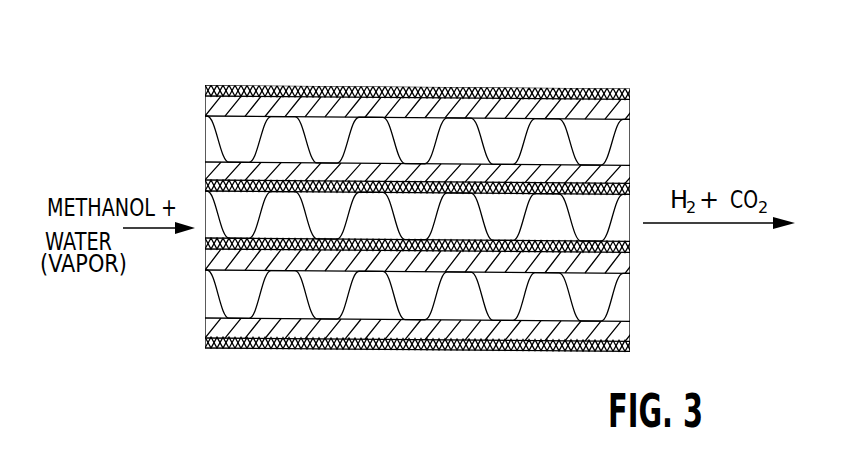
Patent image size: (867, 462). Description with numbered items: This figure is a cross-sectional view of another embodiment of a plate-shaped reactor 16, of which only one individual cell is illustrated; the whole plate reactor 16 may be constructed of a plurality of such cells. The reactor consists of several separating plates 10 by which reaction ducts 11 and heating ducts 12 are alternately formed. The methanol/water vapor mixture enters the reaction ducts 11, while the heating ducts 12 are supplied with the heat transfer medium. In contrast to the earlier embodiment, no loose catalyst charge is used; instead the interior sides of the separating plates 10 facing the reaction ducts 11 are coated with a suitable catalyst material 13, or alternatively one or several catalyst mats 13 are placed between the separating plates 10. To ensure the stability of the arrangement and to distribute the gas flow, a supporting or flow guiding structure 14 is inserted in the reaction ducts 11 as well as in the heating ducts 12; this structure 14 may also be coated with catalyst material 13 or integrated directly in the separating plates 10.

The separating plates 10 is at (333, 97).
The reaction ducts 11 is at (375, 223).
The heating ducts 12 is at (590, 133).
The catalyst material 13 is at (424, 168).
The supporting or flow guiding structure 14 is at (257, 137).
The plate-shaped reactor 16 is at (650, 95).